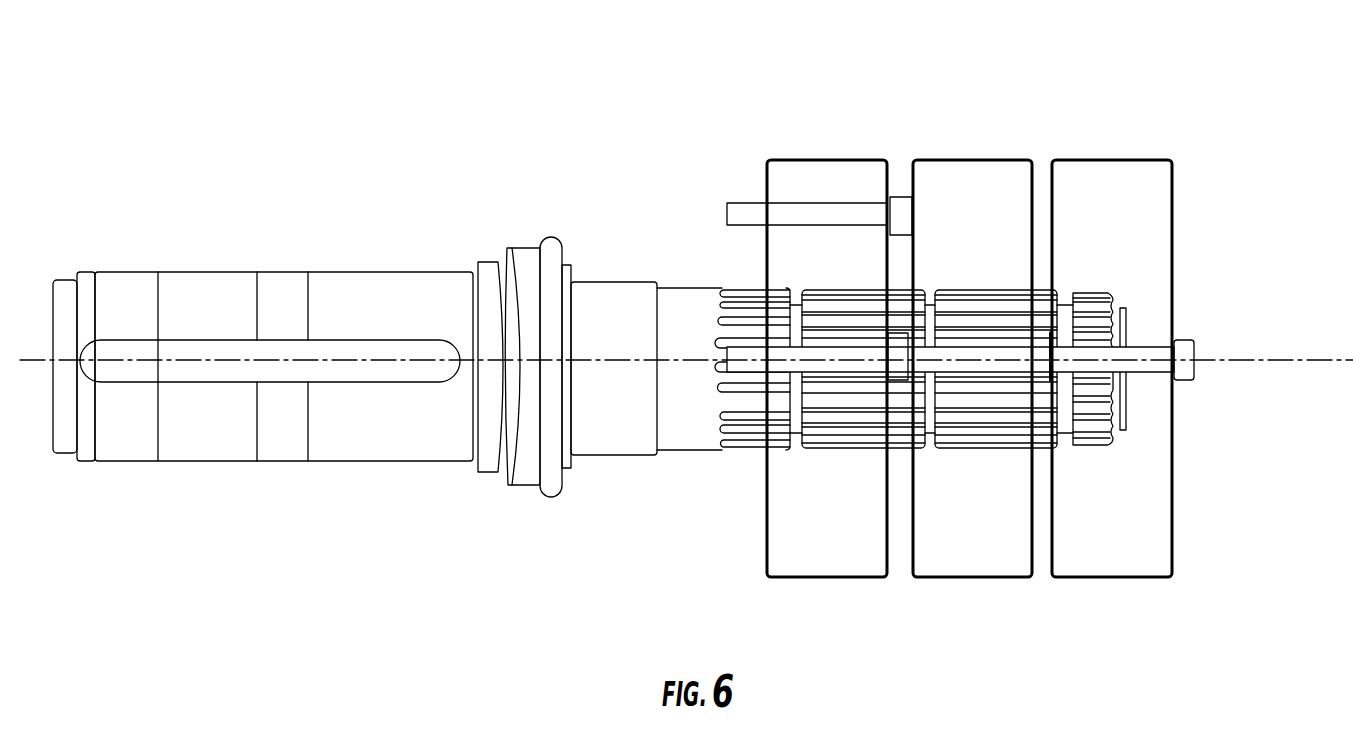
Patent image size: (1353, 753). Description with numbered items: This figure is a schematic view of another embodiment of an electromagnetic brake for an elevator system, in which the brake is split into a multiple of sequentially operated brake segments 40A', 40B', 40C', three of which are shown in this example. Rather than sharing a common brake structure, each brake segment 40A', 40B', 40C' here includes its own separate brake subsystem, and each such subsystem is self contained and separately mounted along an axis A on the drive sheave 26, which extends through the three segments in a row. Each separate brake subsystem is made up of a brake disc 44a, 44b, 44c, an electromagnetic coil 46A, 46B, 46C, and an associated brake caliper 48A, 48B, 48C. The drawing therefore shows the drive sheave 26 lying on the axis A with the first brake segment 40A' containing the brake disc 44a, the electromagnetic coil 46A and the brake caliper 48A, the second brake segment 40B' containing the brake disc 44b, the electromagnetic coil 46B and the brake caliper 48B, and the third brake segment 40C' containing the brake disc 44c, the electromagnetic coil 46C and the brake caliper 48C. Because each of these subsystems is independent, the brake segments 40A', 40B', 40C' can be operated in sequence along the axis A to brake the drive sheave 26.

The drive sheave 26 is at (556, 183).
The brake segment 40A' is at (819, 324).
The brake segment 40B' is at (991, 324).
The brake segment 40C' is at (1149, 324).
The brake disc 44a is at (812, 565).
The brake disc 44b is at (987, 565).
The brake disc 44c is at (1113, 565).
The electromagnetic coil 46A is at (745, 358).
The electromagnetic coil 46B is at (973, 360).
The electromagnetic coil 46C is at (1143, 348).
The brake caliper 48A is at (895, 332).
The brake caliper 48B is at (1040, 332).
The brake caliper 48C is at (1195, 347).
The axis A is at (1315, 360).